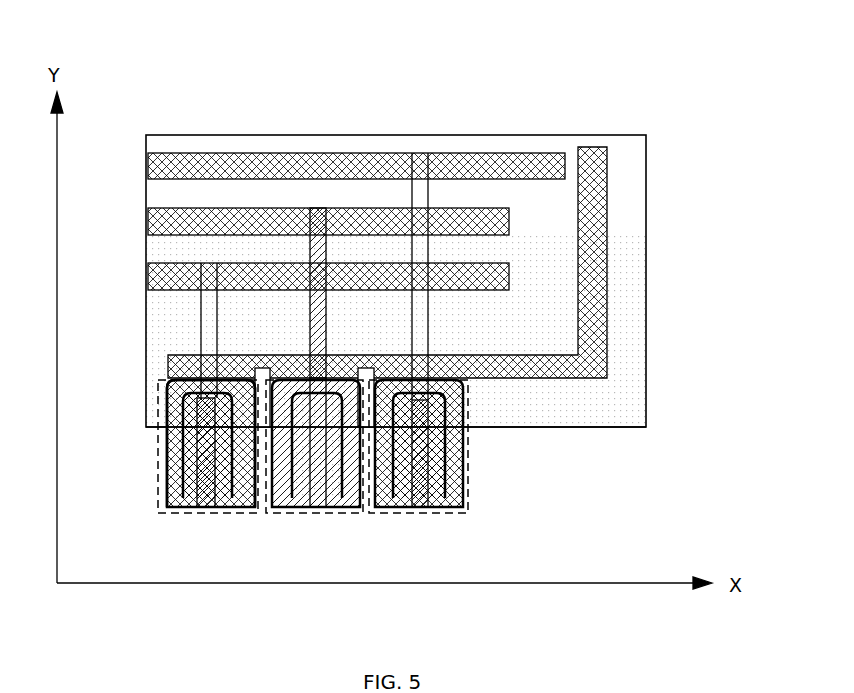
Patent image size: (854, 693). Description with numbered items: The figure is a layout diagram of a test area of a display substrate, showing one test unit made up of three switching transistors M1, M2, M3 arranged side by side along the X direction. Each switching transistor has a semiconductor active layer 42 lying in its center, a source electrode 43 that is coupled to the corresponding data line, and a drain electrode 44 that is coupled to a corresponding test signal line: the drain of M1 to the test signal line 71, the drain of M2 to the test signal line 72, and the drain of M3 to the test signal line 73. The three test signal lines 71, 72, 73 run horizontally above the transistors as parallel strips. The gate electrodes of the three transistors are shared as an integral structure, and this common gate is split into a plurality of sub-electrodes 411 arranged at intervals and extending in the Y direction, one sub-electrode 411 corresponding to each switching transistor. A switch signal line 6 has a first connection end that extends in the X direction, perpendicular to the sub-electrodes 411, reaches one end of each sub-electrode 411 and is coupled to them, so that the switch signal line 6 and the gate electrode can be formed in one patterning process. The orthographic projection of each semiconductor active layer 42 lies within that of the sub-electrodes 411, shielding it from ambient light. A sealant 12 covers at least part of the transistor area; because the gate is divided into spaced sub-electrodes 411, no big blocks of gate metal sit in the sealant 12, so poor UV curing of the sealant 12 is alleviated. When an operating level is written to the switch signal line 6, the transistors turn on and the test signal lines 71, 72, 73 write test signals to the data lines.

The switch signal line 6 is at (602, 292).
The sealant 12 is at (625, 347).
The test signal line 71 is at (147, 282).
The test signal line 72 is at (147, 226).
The test signal line 73 is at (147, 170).
The sub-electrode 411 is at (178, 381).
The semiconductor active layer 42 is at (195, 437).
The source electrode 43 is at (198, 466).
The drain electrode 44 is at (174, 487).
The switching transistor M1 is at (183, 428).
The switching transistor M2 is at (313, 513).
The switching transistor M3 is at (410, 513).